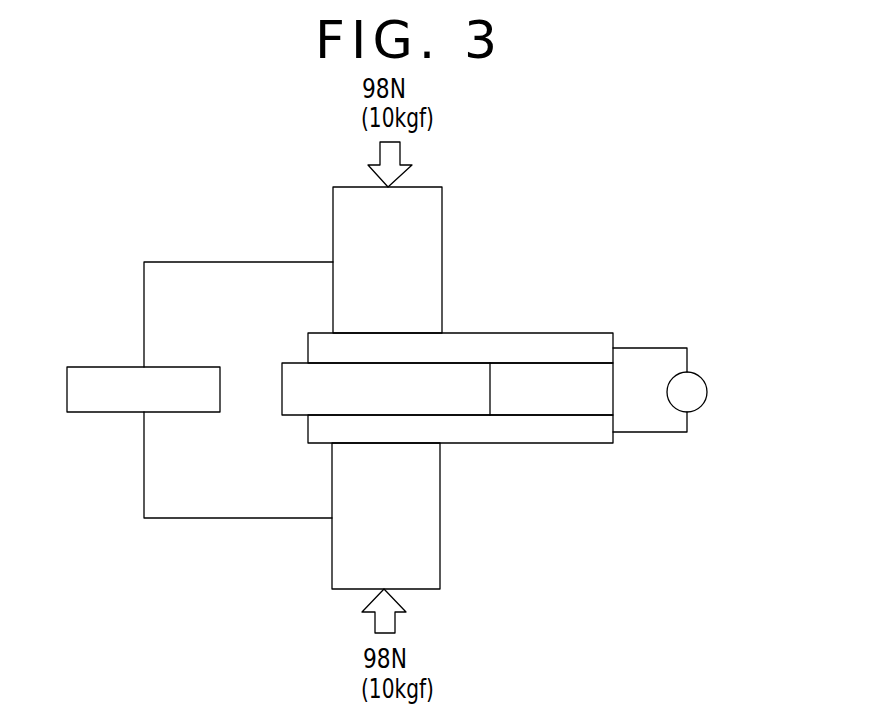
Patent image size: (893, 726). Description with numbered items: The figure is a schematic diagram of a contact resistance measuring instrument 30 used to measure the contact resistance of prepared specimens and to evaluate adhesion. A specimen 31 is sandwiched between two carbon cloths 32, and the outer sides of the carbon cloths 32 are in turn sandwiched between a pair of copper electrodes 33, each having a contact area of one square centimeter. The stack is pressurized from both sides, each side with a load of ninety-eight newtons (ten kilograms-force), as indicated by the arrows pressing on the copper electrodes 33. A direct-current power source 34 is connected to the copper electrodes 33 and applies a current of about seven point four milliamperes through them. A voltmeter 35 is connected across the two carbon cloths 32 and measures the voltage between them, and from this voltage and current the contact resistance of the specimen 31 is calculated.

The contact resistance measuring instrument 30 is at (553, 187).
The specimen 31 is at (282, 375).
The carbon cloths 32 is at (525, 353).
The copper electrodes 33 is at (422, 503).
The direct-current power source 34 is at (105, 367).
The voltmeter 35 is at (707, 391).